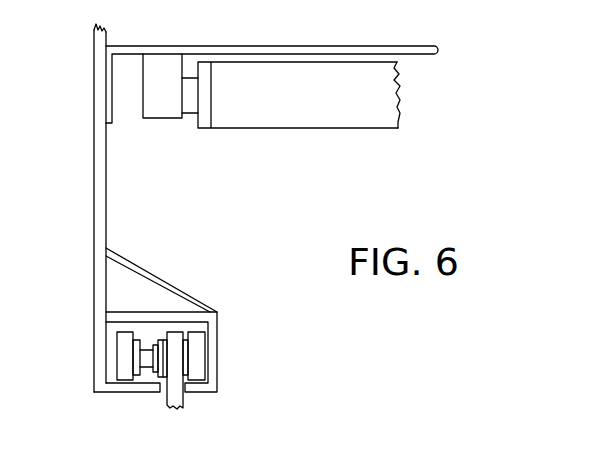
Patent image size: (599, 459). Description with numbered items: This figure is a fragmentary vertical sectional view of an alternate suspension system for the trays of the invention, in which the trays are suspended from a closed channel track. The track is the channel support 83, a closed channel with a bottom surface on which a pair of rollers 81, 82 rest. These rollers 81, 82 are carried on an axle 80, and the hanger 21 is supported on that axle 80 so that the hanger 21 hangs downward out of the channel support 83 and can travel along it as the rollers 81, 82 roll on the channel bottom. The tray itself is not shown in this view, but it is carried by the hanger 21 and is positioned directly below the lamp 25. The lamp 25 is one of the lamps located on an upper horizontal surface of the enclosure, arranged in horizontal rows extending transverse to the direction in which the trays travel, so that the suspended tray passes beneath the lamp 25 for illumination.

The lamp 25 is at (335, 105).
The channel support 83 is at (100, 362).
The roller 81 is at (124, 365).
The axle 80 is at (143, 362).
The hanger 21 is at (175, 385).
The roller 82 is at (198, 367).